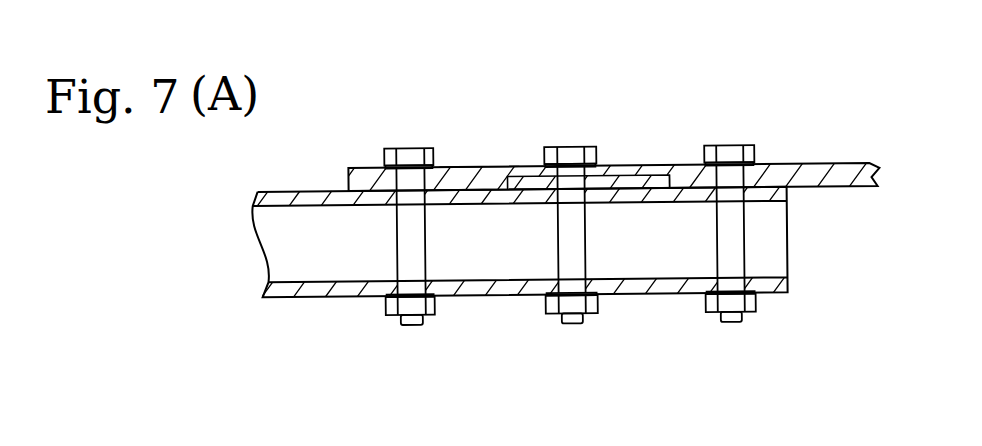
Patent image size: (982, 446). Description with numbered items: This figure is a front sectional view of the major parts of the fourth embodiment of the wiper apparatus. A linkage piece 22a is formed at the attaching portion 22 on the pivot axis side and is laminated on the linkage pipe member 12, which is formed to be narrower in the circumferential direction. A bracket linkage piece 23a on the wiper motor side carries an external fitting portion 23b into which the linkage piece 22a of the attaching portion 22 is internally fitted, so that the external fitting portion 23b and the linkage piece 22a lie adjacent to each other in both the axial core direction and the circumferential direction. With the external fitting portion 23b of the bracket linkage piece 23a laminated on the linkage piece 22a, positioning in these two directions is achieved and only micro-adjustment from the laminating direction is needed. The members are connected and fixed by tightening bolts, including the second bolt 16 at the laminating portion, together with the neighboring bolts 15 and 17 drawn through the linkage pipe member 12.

The rectangular tube bar 12 is at (309, 292).
The bolt 15 is at (412, 250).
The bolt 16 is at (574, 253).
The bolt 17 is at (730, 258).
The mounting plate 22 is at (817, 156).
The recess of mounting plate 22a is at (658, 181).
The upper plate portion 23a is at (494, 146).
The insert plate portion 23b is at (634, 177).